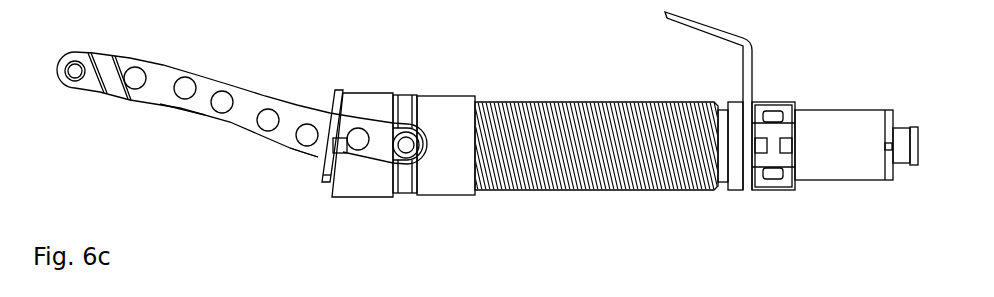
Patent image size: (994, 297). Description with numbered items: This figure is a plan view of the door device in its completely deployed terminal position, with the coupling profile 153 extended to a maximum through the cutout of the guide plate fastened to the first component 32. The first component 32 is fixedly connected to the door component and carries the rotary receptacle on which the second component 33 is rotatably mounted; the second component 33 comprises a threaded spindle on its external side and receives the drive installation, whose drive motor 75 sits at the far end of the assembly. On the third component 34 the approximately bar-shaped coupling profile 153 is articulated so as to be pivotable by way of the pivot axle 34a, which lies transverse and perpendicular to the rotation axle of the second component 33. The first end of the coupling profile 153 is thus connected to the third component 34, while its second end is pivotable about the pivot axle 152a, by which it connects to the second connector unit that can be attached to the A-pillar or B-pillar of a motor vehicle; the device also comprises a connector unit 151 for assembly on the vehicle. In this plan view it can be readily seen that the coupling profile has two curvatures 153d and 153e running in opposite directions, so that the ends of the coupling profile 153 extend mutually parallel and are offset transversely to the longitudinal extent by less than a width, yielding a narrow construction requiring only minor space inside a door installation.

The pivot axle 152a is at (76, 66).
The coupling profile 153 is at (212, 85).
The curvature 153d is at (182, 106).
The curvature 153e is at (300, 156).
The connector unit 151 is at (338, 90).
The pivot axle 34a is at (404, 146).
The third component 34 is at (460, 190).
The second component 33 is at (595, 190).
The first component 32 is at (750, 191).
The drive motor 75 is at (847, 123).